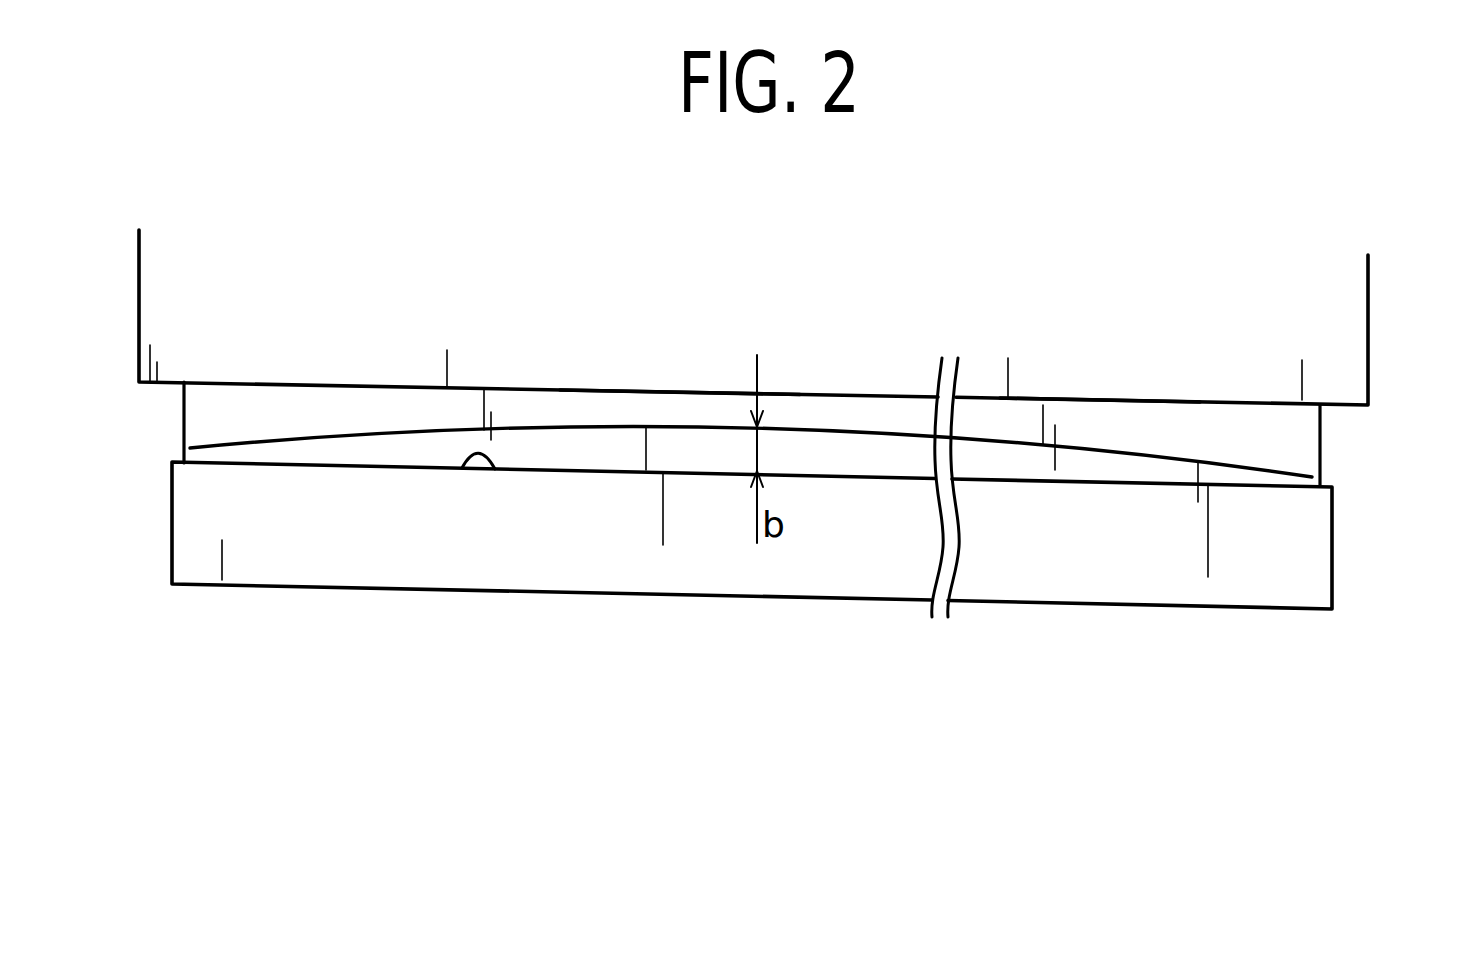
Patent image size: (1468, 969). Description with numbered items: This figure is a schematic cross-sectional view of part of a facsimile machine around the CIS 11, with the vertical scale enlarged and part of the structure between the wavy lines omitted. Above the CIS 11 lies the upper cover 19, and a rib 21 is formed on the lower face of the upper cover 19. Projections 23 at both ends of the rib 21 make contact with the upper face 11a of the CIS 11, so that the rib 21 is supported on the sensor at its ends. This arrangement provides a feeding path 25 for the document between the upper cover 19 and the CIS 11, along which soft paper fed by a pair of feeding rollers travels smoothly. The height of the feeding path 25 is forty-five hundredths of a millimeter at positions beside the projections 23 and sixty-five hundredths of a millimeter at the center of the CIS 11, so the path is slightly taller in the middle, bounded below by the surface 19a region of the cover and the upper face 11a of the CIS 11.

The CIS 11 is at (633, 563).
The upper face of the CIS 11a is at (473, 457).
The upper cover 19 is at (1342, 320).
The bottom surface of upper plate 19a is at (693, 392).
The rib 21 is at (1110, 417).
The projections 23 is at (185, 447).
The feeding path 25 is at (375, 450).